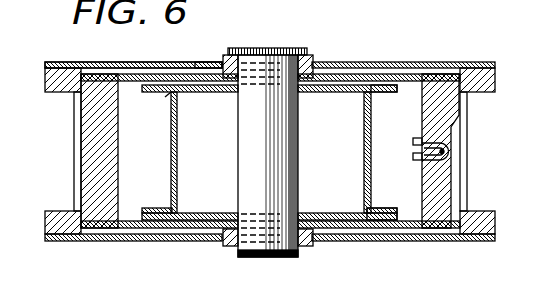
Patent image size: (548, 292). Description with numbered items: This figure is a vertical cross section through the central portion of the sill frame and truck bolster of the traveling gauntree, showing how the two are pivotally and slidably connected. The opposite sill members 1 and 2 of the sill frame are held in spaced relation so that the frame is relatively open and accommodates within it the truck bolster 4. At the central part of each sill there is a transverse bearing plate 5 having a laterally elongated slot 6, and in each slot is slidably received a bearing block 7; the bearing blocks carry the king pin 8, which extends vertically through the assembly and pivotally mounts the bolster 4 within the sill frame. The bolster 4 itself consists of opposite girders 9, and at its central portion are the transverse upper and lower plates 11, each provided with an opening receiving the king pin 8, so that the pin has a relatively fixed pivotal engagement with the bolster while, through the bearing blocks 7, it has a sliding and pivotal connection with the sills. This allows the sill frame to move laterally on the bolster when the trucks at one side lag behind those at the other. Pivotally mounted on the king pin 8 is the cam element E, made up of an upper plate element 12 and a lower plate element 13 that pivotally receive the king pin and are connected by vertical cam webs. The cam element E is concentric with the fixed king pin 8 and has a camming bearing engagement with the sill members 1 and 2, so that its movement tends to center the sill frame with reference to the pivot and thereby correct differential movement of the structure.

The sill member 1 is at (468, 149).
The sill member 2 is at (75, 153).
The truck bolster 4 is at (208, 152).
The transverse bearing plate 5 is at (164, 62).
The laterally elongated slot 6 is at (212, 62).
The bearing block 7 is at (310, 60).
The king pin 8 is at (277, 47).
The girder 9 is at (169, 159).
The transverse plate 11 is at (327, 94).
The upper plate element 12 is at (400, 88).
The lower plate element 13 is at (403, 214).
The cam element E is at (113, 116).